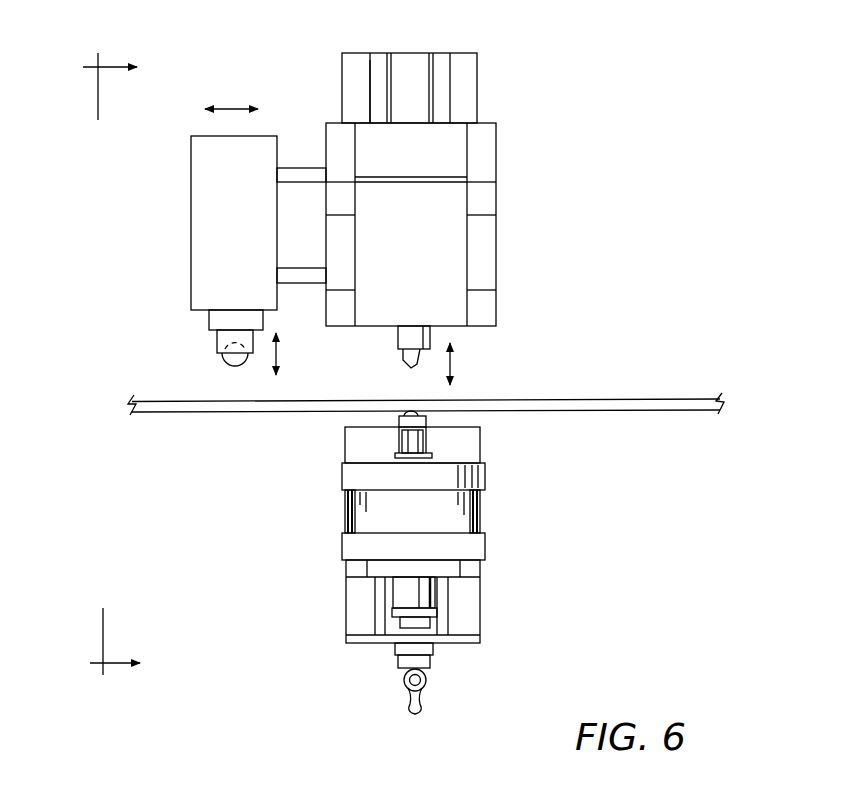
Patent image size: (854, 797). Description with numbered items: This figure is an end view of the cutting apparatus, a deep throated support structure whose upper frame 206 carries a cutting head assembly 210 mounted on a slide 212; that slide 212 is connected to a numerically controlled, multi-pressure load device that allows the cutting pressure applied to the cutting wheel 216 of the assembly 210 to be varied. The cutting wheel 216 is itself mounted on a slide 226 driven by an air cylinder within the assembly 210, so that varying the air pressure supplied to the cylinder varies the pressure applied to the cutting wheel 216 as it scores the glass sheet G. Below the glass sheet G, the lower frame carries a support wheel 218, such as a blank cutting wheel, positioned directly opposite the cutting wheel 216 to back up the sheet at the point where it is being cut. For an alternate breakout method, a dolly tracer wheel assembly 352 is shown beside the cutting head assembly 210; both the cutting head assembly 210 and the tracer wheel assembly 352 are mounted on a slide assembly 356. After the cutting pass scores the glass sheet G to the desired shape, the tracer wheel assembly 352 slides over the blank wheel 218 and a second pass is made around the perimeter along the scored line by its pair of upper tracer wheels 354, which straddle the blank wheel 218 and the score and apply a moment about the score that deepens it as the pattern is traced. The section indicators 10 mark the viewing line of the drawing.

The section line indicator 10 is at (100, 364).
The upper frame 206 is at (477, 53).
The cutting head assembly 210 is at (470, 193).
The slide 212 is at (370, 82).
The cutting wheel 216 is at (405, 368).
The support wheel 218 is at (427, 414).
The slide 226 is at (398, 340).
The dolly tracer wheel assembly 352 is at (191, 207).
The upper tracer wheels 354 is at (232, 362).
The slide assembly 356 is at (302, 168).
The glass sheet G is at (612, 398).